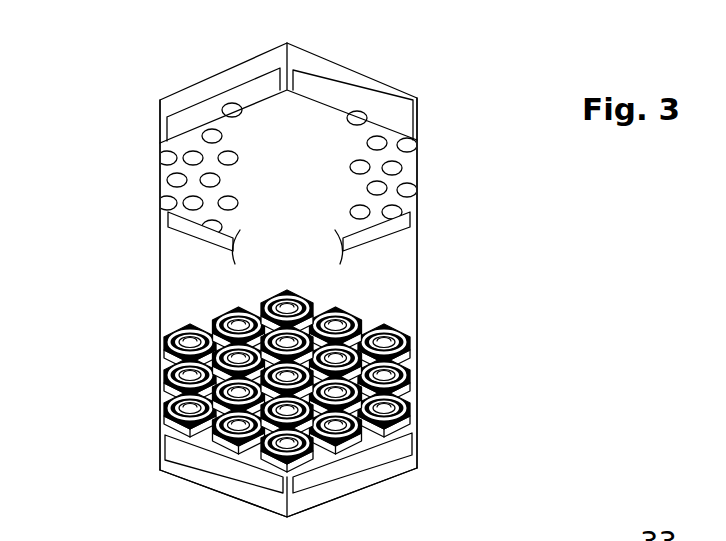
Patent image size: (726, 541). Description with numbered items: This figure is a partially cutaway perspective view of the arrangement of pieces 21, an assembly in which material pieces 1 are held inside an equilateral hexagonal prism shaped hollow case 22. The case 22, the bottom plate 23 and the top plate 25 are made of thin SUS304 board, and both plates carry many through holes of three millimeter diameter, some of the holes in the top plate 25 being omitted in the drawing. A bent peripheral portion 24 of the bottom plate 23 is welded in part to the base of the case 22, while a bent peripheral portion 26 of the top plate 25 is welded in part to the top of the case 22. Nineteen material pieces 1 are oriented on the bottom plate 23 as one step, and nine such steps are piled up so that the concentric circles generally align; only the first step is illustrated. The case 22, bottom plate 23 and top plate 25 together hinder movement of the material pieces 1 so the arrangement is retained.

The material piece 1 is at (172, 373).
The arrangement of pieces (1) 21 is at (148, 78).
The equilateral hexagonal prism shaped hollow case 22 is at (418, 270).
The bottom plate 23 is at (368, 442).
The peripheral portion of the bottom plate 24 is at (412, 438).
The top plate 25 is at (287, 168).
The peripheral portion of the top plate 26 is at (332, 93).